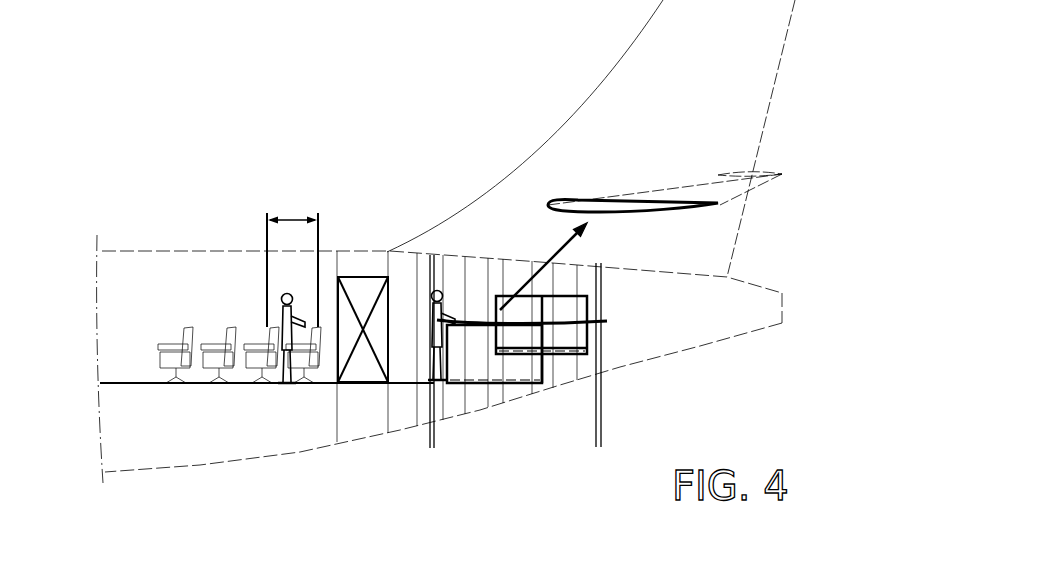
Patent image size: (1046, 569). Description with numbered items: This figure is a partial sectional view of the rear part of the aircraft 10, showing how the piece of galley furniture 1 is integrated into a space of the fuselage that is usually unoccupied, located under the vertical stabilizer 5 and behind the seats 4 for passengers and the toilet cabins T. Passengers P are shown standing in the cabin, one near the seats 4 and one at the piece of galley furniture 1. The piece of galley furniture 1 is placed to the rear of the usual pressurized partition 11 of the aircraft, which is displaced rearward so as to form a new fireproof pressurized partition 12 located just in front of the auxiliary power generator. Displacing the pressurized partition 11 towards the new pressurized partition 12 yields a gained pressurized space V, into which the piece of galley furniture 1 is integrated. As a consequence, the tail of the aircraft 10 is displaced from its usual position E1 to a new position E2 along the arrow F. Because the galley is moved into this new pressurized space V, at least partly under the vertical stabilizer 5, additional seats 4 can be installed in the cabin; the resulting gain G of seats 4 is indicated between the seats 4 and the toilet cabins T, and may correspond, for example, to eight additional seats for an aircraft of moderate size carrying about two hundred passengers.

The piece of galley furniture 1 is at (478, 350).
The seats 4 is at (188, 328).
The vertical stabilizer 5 is at (617, 88).
The aircraft 10 is at (416, 177).
The pressurized partition 11 is at (430, 438).
The fireproof pressurized partition 12 is at (601, 422).
The passenger P is at (282, 307).
The gain G is at (283, 217).
The toilet cabins T is at (363, 287).
The arrow F is at (562, 251).
The pressurized space V is at (492, 428).
The usual position E1 is at (604, 323).
The new position E2 is at (700, 206).